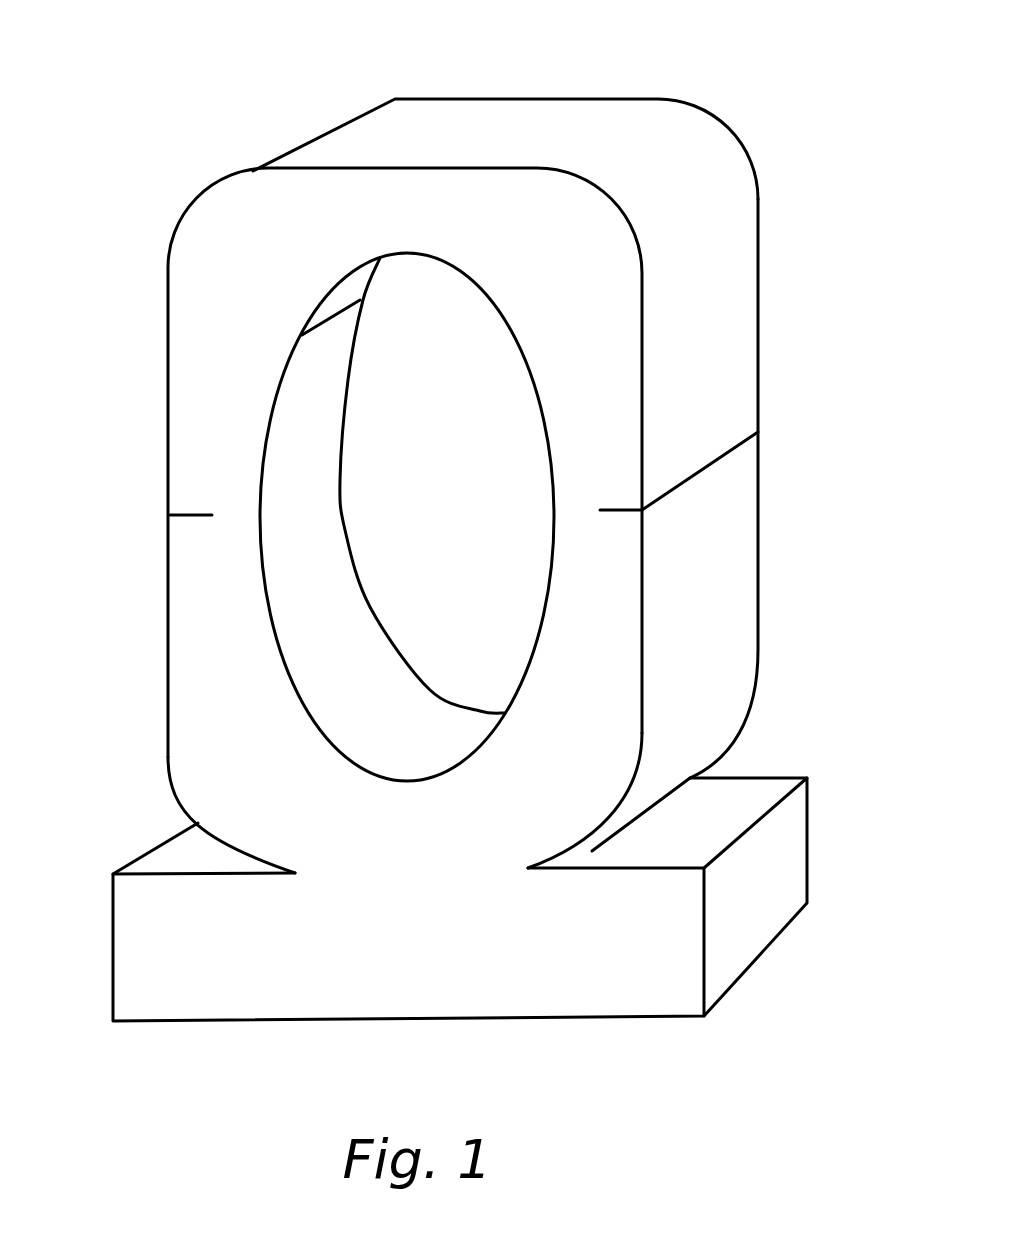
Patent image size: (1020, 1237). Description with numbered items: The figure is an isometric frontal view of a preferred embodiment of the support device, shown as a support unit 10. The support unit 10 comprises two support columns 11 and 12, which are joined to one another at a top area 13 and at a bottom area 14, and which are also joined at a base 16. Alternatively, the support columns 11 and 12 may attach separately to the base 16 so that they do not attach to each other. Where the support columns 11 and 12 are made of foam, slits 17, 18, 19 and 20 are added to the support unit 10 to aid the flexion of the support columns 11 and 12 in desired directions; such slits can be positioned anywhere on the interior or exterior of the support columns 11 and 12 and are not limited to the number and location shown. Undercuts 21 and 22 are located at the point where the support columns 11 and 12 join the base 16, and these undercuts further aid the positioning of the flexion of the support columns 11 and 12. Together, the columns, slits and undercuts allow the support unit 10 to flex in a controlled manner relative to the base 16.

The support unit 10 is at (467, 540).
The support column 11 is at (208, 400).
The support column 12 is at (722, 340).
The top area 13 is at (448, 99).
The bottom area 14 is at (387, 853).
The base 16 is at (508, 978).
The slit 17 is at (302, 335).
The slit 18 is at (510, 332).
The slit 19 is at (183, 515).
The slit 20 is at (640, 510).
The undercut 21 is at (225, 853).
The undercut 22 is at (600, 845).